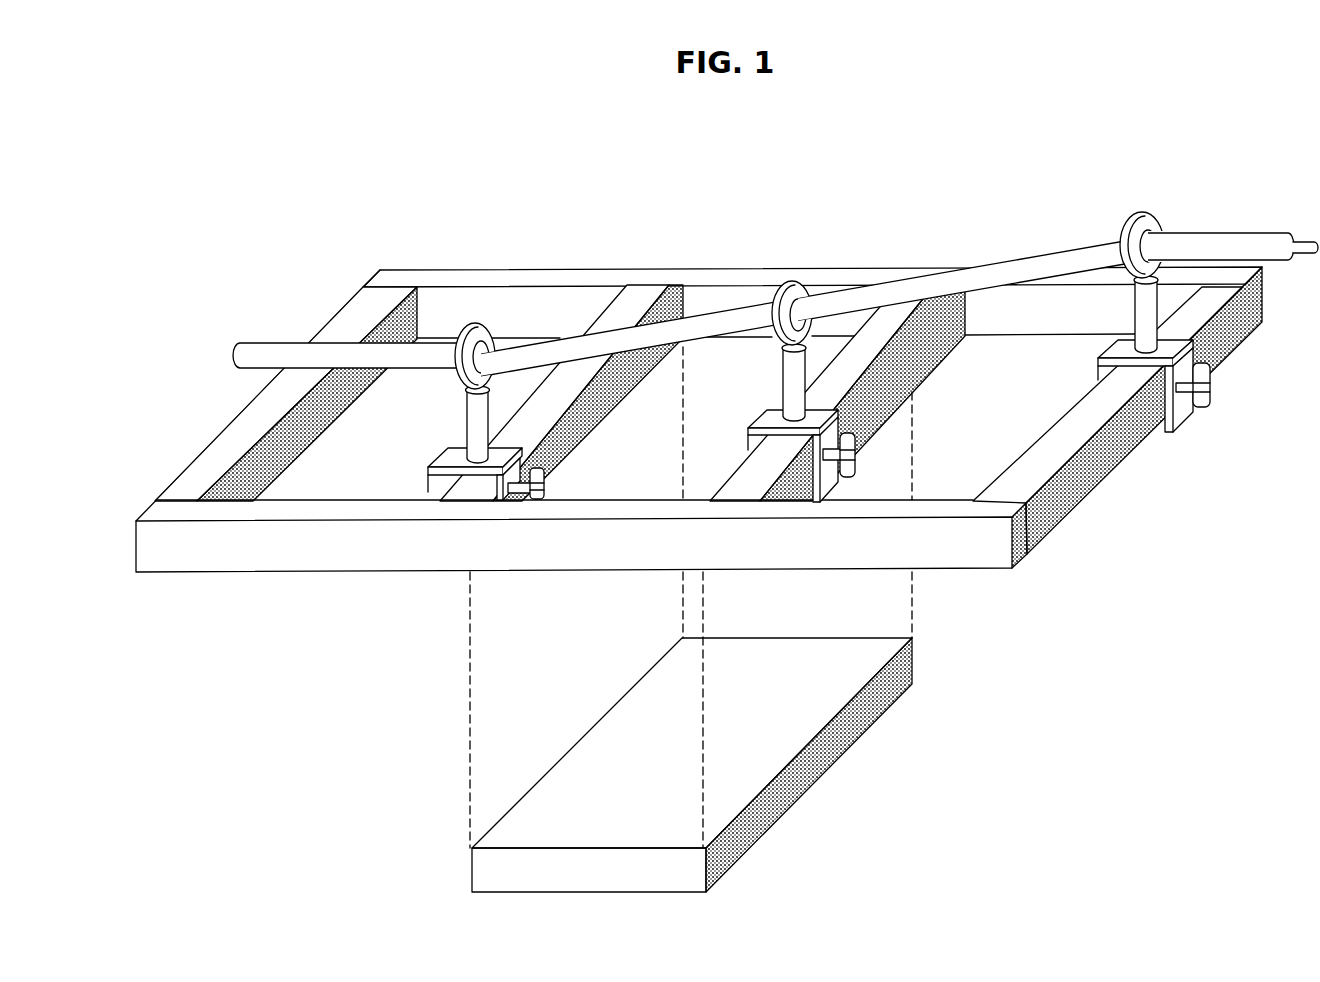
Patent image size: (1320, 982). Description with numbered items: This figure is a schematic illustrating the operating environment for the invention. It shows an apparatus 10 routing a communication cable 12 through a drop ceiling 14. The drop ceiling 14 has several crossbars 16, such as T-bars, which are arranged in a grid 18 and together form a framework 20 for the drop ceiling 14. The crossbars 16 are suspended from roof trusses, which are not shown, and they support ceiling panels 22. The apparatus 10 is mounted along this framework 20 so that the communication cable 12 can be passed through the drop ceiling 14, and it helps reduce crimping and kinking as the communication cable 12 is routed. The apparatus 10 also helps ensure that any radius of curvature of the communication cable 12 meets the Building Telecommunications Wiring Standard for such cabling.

The apparatus 10 is at (477, 328).
The communication cable 12 is at (254, 352).
The drop ceiling 14 is at (588, 205).
The crossbars 16 is at (355, 320).
The grid 18 is at (993, 583).
The framework 20 is at (1233, 330).
The ceiling panels 22 is at (815, 748).